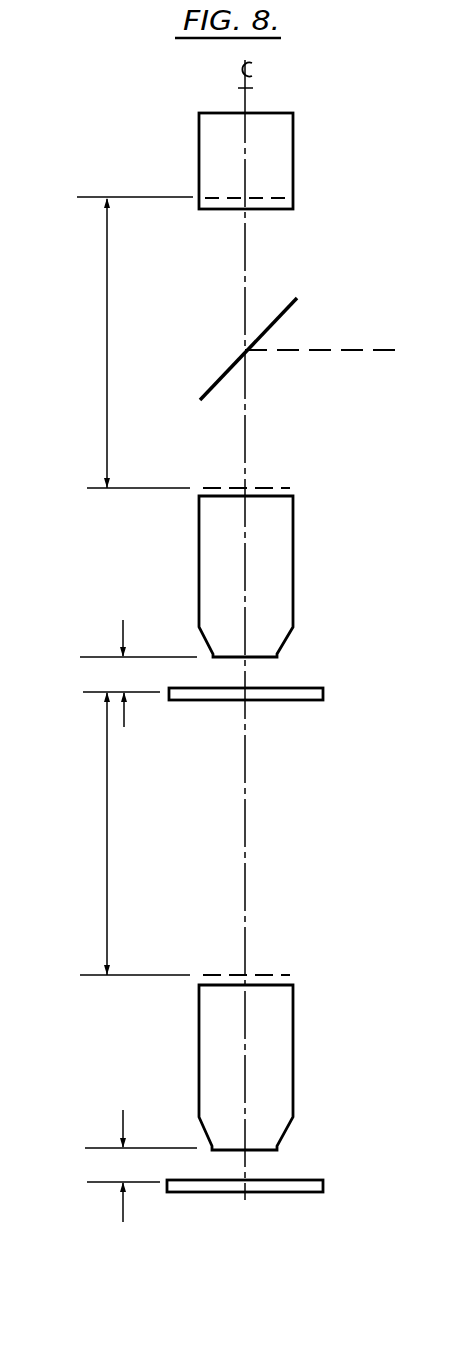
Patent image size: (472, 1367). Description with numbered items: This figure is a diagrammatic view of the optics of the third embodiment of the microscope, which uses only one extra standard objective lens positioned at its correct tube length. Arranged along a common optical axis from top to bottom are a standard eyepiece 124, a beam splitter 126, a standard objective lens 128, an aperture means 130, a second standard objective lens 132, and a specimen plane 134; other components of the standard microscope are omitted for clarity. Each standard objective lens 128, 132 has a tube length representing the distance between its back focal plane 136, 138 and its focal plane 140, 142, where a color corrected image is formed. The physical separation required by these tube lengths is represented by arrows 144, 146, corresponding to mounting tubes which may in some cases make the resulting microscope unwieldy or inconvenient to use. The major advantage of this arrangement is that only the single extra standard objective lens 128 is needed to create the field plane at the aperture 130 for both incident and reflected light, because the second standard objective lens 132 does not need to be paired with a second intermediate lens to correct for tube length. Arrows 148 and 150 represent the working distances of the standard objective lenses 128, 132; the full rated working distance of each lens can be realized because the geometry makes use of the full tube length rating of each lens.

The standard eyepiece 124 is at (283, 162).
The beam splitter 126 is at (285, 316).
The standard objective lens 128 is at (282, 568).
The aperture means 130 is at (313, 703).
The second standard objective lens 132 is at (278, 1071).
The specimen plane 134 is at (305, 1180).
The back focal plane 136 is at (283, 489).
The back focal plane 138 is at (283, 973).
The focal plane 140 is at (100, 196).
The focal plane 142 is at (95, 692).
The arrow representing physical separation 144 is at (137, 343).
The arrow representing physical separation 146 is at (135, 833).
The arrow representing working distance 148 is at (138, 660).
The arrow representing working distance 150 is at (141, 1152).